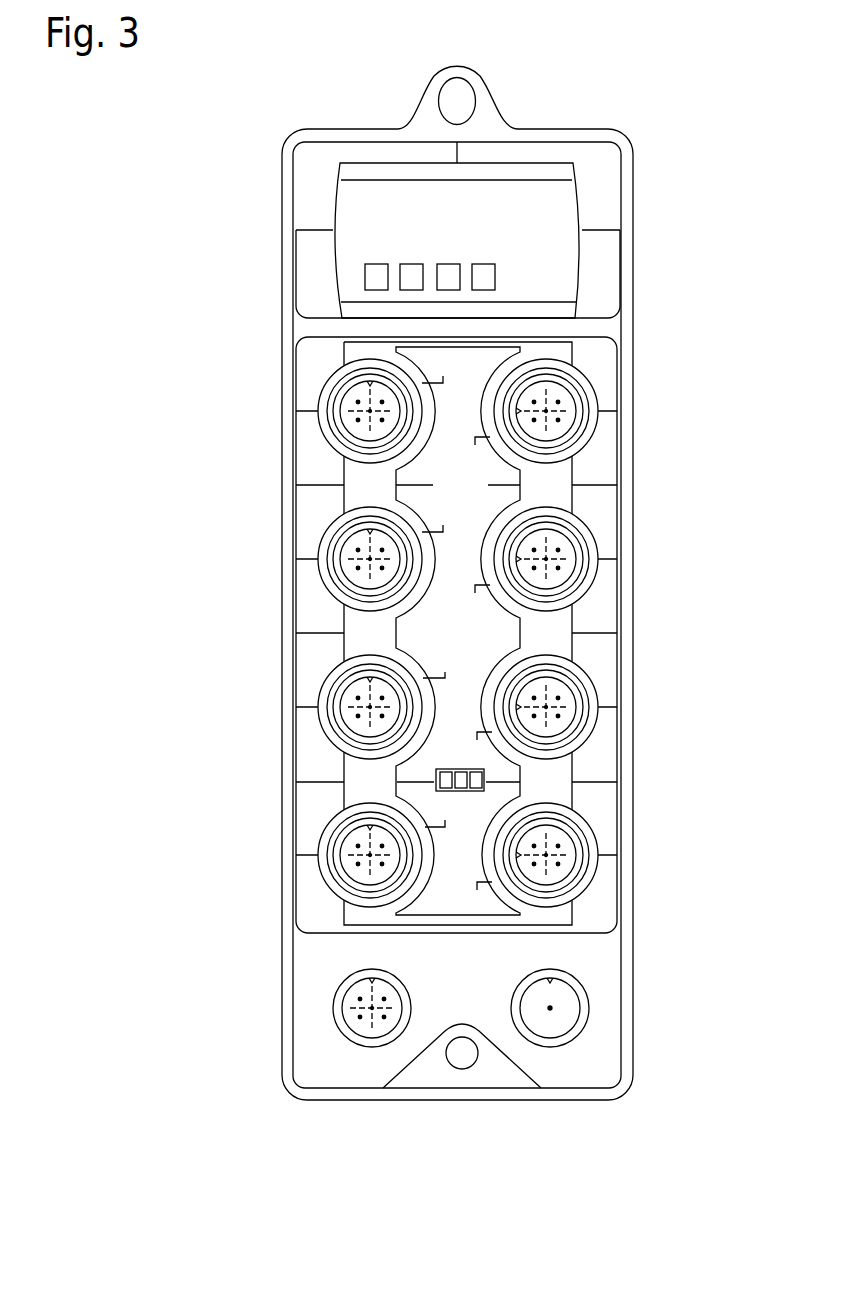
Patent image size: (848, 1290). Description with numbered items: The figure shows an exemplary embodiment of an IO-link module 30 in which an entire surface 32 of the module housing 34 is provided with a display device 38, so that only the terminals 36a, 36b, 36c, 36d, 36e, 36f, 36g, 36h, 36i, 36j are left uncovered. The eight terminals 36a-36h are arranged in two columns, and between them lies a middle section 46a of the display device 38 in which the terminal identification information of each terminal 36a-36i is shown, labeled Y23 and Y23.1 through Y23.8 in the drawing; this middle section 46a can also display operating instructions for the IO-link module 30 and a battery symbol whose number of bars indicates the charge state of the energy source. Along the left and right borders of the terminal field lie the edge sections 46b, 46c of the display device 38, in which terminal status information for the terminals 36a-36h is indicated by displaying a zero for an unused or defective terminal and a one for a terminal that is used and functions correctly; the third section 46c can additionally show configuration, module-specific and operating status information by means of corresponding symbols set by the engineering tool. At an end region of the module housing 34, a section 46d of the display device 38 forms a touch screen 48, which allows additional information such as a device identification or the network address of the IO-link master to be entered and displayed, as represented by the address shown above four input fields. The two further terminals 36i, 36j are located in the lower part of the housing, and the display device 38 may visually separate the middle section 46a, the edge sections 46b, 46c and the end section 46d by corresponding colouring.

The IO-link module 30 is at (167, 192).
The surface 32 is at (597, 452).
The module housing 34 is at (622, 192).
The terminal 36a is at (325, 828).
The terminal 36b is at (325, 675).
The terminal 36c is at (338, 528).
The terminal 36d is at (336, 376).
The terminal 36e is at (582, 825).
The terminal 36f is at (582, 675).
The terminal 36g is at (578, 528).
The terminal 36h is at (580, 380).
The terminal 36i is at (335, 993).
The terminal 36j is at (588, 993).
The display device 38 is at (314, 369).
The middle section 46a is at (472, 913).
The edge section 46b is at (308, 607).
The edge section 46c is at (605, 492).
The section 46d is at (582, 263).
The touch screen 48 is at (352, 278).